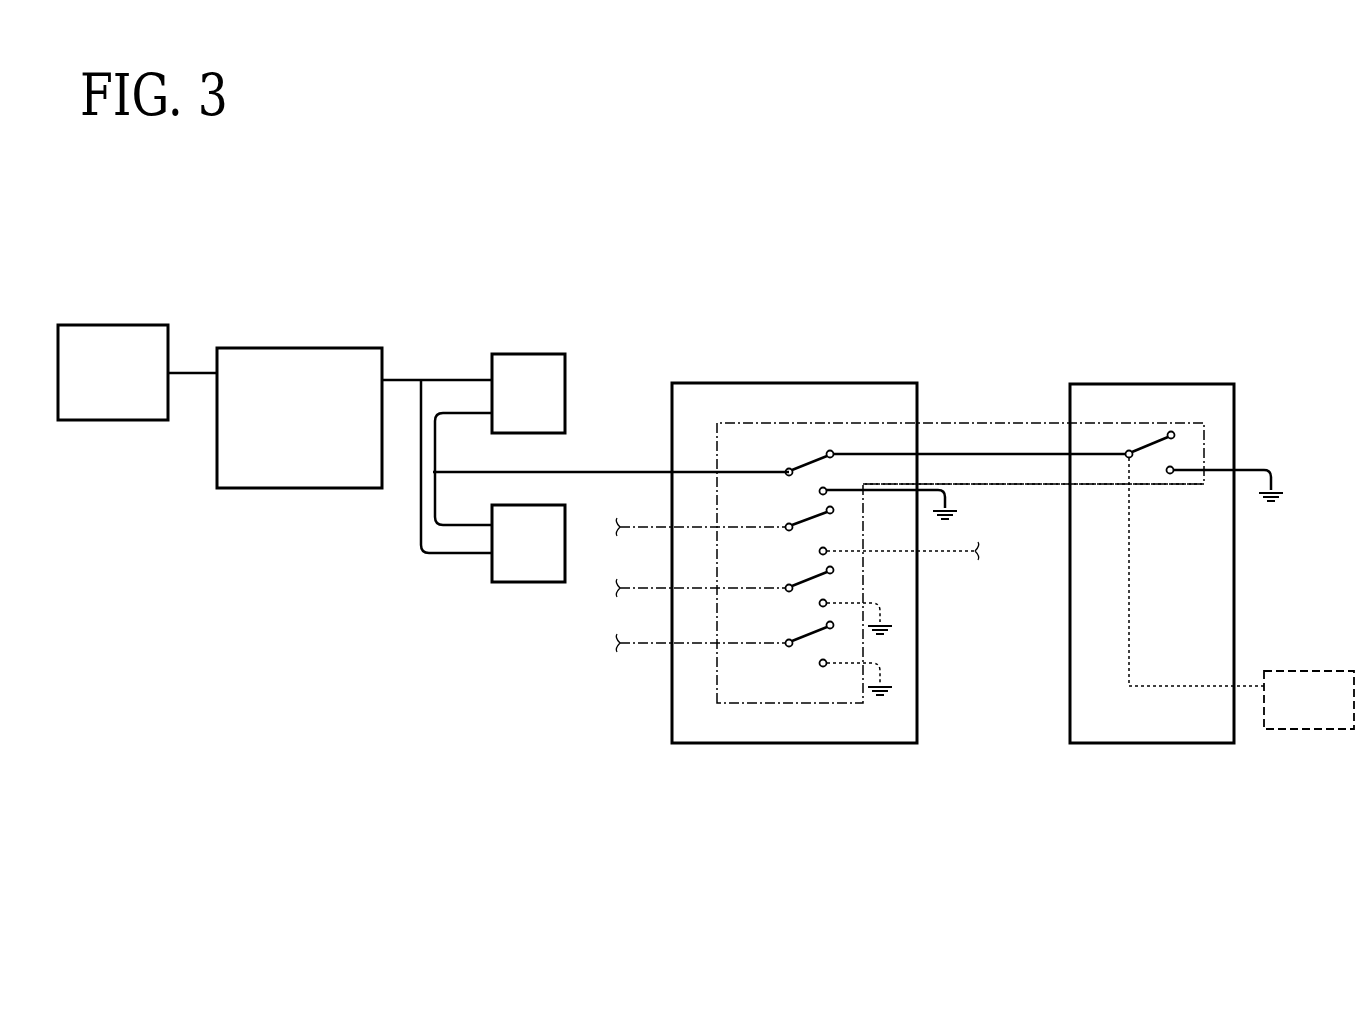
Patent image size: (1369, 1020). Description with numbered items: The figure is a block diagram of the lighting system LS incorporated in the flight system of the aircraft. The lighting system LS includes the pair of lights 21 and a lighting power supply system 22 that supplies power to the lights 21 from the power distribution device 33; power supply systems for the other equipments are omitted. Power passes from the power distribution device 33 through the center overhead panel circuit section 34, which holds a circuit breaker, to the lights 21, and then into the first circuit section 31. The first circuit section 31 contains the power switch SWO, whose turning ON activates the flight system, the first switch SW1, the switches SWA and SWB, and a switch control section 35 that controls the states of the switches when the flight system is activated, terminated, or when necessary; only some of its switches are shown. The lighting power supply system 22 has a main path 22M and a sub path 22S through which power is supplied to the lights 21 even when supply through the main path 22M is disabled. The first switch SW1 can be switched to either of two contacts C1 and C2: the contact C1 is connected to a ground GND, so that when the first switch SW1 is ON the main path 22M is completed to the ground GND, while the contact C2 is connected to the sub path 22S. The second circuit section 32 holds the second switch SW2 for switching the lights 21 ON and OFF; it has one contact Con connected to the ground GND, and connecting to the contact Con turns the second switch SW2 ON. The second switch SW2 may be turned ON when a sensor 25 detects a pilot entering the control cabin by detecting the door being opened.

The lighting system LS is at (490, 220).
The power distribution device 33 is at (128, 325).
The center overhead panel circuit section 34 is at (337, 348).
The lights 21 is at (535, 354).
The lighting power supply system 22 is at (590, 448).
The main path 22M is at (637, 470).
The sub path 22S is at (1022, 423).
The first circuit section 31 is at (883, 383).
The second circuit section 32 is at (1197, 384).
The switch control section 35 is at (962, 423).
The sensor 25 is at (1315, 671).
The first switch SW1 is at (789, 468).
The second switch SW2 is at (1129, 450).
The contact C1 is at (821, 492).
The contact C2 is at (830, 450).
The switch SWA is at (788, 531).
The switch SWB is at (788, 592).
The power switch SWO is at (789, 648).
The contact Con is at (1170, 475).
The ground GND is at (1076, 614).